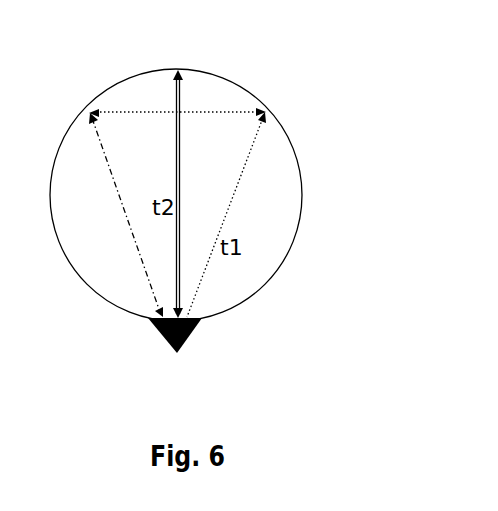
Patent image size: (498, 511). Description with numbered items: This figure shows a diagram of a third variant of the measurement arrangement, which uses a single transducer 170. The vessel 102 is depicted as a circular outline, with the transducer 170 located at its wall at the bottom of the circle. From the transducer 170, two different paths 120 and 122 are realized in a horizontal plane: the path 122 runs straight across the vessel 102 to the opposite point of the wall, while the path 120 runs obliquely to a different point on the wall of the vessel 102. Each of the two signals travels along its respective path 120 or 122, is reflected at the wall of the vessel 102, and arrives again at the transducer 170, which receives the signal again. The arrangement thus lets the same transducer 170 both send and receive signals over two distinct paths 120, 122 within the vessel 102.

The vessel 102 is at (300, 193).
The path 120 is at (103, 158).
The path 122 is at (178, 170).
The transducer 170 is at (183, 348).